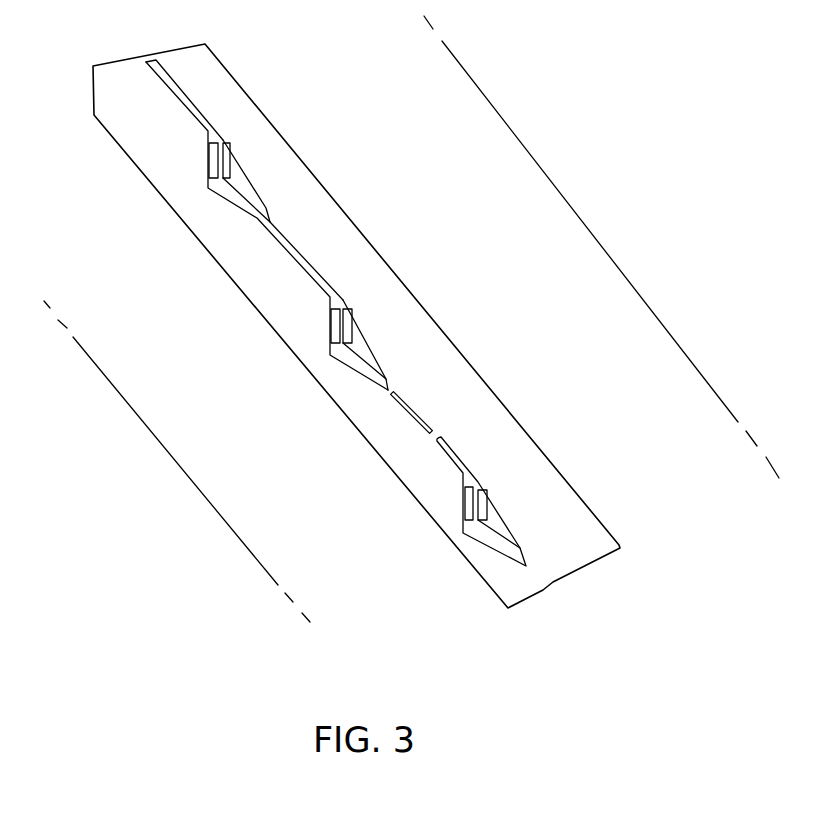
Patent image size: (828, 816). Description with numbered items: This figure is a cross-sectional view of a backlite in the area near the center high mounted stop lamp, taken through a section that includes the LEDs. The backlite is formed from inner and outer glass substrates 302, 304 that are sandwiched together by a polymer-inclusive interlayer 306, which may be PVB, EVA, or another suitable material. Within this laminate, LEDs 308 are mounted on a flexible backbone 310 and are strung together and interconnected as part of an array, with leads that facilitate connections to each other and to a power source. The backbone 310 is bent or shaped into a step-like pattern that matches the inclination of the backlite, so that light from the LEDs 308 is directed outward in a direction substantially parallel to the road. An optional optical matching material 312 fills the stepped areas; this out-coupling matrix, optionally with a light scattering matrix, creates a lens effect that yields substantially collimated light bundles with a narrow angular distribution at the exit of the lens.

The first portion of carrier 302 is at (222, 407).
The second portion of carrier 304 is at (478, 289).
The polymer-inclusive interlayer 306 is at (552, 563).
The LEDs 308 is at (485, 503).
The flexible backbone 310 is at (508, 552).
The optical matching material 312 is at (357, 338).